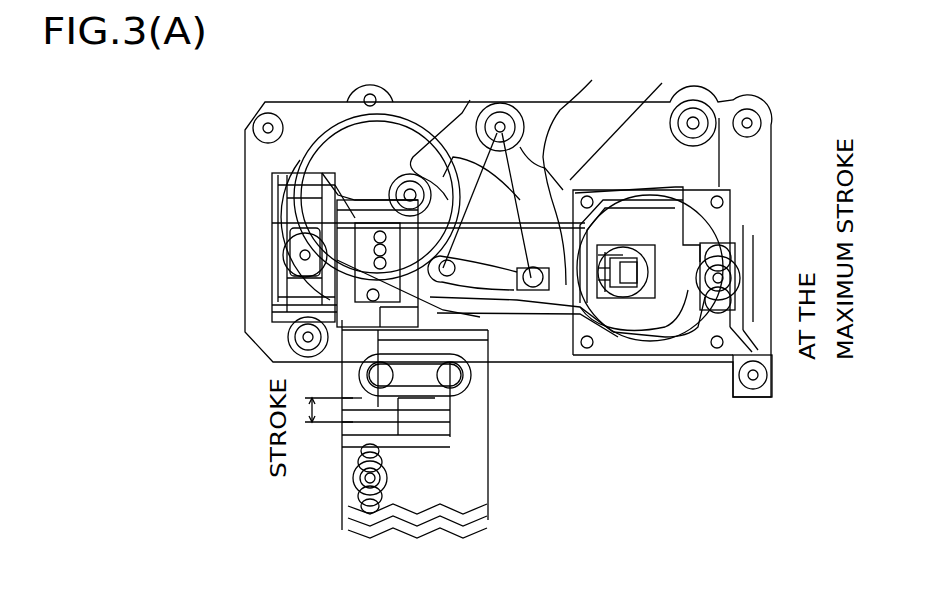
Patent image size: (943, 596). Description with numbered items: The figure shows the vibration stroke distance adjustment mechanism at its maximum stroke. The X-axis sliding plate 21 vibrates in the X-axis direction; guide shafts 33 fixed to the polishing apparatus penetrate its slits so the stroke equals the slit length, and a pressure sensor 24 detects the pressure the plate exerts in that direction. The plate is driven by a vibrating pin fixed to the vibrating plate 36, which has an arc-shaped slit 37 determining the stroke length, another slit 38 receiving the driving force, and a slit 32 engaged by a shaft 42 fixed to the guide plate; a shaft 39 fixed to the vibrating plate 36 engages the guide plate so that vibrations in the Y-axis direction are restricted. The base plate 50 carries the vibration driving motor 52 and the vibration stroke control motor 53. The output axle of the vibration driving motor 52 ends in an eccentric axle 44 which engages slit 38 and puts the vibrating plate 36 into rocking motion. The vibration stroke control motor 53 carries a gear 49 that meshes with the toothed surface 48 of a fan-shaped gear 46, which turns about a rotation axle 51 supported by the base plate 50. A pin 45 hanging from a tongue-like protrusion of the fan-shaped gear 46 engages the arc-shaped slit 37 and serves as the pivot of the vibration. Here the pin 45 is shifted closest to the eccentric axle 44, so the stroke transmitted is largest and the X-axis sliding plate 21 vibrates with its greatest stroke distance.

The X-axis sliding plate 21 is at (393, 530).
The pressure sensor 24 is at (427, 415).
The slit 32 is at (288, 305).
The guide shafts 33 is at (343, 488).
The vibrating plate 36 is at (572, 365).
The arc-shaped slit 37 is at (516, 300).
The slit 38 is at (680, 345).
The shaft 39 is at (753, 340).
The shaft 42 is at (278, 249).
The eccentric axle 44 is at (643, 228).
The pin 45 is at (553, 280).
The fan-shaped gear 46 is at (602, 165).
The surface 48 is at (470, 100).
The gear 49 is at (418, 142).
The base plate 50 is at (765, 155).
The rotation axle 51 is at (503, 107).
The vibration driving motor 52 is at (650, 323).
The vibration stroke control motor 53 is at (345, 140).